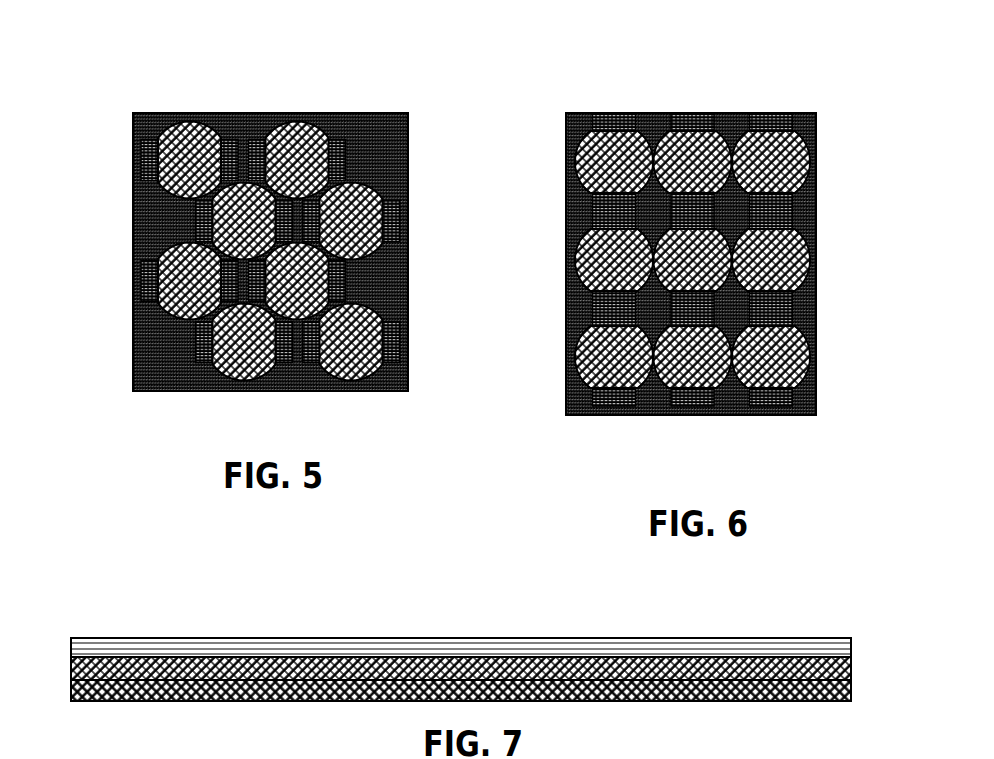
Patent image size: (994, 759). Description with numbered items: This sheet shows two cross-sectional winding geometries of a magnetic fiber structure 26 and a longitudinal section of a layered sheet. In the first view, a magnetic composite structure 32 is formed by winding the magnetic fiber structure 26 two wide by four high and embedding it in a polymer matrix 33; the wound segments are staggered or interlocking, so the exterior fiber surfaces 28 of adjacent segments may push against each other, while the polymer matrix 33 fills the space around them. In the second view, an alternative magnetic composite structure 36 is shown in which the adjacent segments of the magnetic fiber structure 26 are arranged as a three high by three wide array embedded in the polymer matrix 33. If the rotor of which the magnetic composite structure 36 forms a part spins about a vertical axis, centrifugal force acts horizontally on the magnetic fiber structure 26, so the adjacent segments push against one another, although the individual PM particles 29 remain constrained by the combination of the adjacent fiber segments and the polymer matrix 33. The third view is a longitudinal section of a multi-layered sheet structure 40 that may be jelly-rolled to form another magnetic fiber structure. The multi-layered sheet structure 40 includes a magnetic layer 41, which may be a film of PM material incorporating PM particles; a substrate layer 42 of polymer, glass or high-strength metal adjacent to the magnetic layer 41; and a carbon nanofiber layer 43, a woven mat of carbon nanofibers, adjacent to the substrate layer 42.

In FIG. 5, the magnetic fiber structure 26 is at (202, 104).
In FIG. 6, the magnetic fiber structure 26 is at (673, 98).
In FIG. 5, the exterior fiber surfaces 28 is at (166, 113).
In FIG. 6, the exterior fiber surfaces 28 is at (570, 128).
In FIG. 5, the PM particles 29 is at (334, 151).
In FIG. 6, the PM particles 29 is at (692, 112).
In FIG. 5, the magnetic composite structure 32 is at (313, 77).
In FIG. 5, the polymer matrix 33 is at (374, 122).
In FIG. 6, the polymer matrix 33 is at (797, 117).
In FIG. 6, the magnetic composite structure 36 is at (790, 76).
In FIG. 7, the multi-layered sheet structure 40 is at (753, 608).
In FIG. 7, the magnetic layer 41 is at (838, 638).
In FIG. 7, the substrate layer 42 is at (827, 658).
In FIG. 7, the carbon nanofiber layer 43 is at (833, 680).